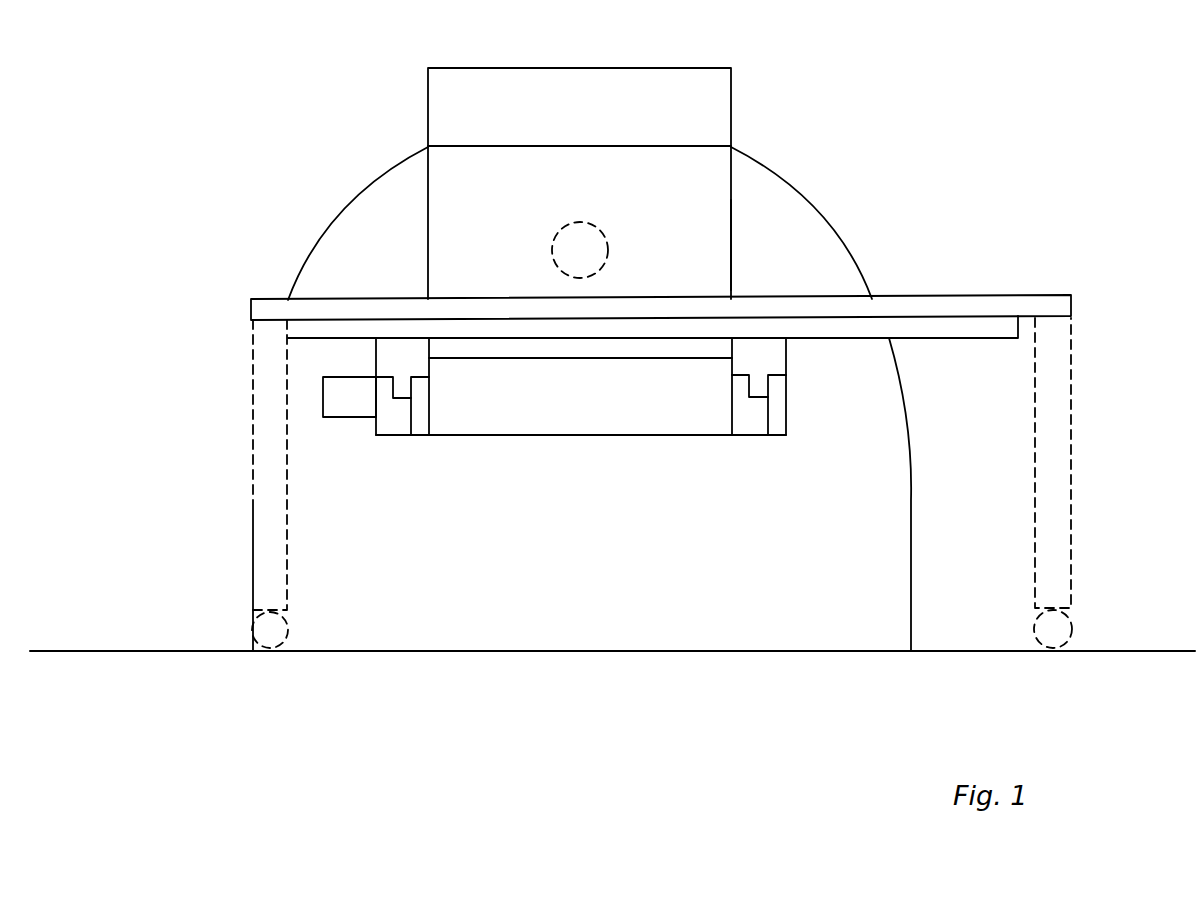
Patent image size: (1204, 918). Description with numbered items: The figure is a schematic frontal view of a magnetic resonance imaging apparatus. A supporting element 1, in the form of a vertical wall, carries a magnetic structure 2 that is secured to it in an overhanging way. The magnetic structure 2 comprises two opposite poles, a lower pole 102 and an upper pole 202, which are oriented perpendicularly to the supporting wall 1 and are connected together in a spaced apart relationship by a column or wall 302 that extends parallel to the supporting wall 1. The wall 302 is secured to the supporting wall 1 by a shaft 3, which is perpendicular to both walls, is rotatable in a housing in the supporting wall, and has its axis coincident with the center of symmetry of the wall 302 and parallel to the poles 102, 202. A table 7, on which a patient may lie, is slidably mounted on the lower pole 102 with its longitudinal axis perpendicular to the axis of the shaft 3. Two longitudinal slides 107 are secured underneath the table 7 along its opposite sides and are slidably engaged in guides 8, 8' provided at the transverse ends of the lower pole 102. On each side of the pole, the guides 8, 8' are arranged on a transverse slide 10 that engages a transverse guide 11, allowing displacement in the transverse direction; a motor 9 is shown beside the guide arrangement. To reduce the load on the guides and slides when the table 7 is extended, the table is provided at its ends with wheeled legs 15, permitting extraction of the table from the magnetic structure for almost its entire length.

The supporting element 1 is at (893, 496).
The magnetic structure 2 is at (736, 196).
The shaft 3 is at (601, 231).
The table 7 is at (946, 298).
The guide 8 is at (780, 386).
The guide 8' is at (383, 386).
The motor 9 is at (347, 405).
The transverse slide 10 is at (405, 391).
The transverse guide 11 is at (418, 420).
The wheeled legs 15 is at (291, 553).
The lower pole 102 is at (700, 420).
The longitudinal slides 107 is at (957, 330).
The upper pole 202 is at (708, 72).
The column or wall 302 is at (718, 243).